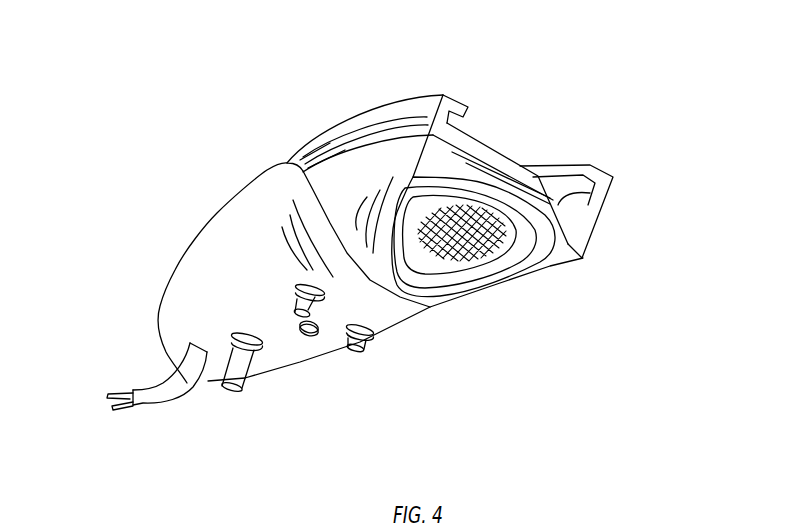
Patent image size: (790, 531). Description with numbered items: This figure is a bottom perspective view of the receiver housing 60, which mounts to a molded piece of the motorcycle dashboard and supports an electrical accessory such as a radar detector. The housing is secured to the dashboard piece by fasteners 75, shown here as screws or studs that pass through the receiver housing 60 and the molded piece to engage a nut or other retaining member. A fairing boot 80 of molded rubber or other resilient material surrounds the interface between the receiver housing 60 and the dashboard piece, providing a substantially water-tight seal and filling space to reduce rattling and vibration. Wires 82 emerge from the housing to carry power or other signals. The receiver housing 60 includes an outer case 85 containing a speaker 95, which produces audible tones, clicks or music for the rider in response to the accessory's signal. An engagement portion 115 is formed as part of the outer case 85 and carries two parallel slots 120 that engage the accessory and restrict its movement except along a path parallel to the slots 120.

The receiver housing 60 is at (576, 71).
The fasteners 75 is at (240, 378).
The fairing boot 80 is at (190, 275).
The wires 82 is at (148, 392).
The outer case 85 is at (353, 153).
The speaker 95 is at (497, 248).
The engagement portion 115 is at (577, 155).
The slots 120 is at (465, 130).